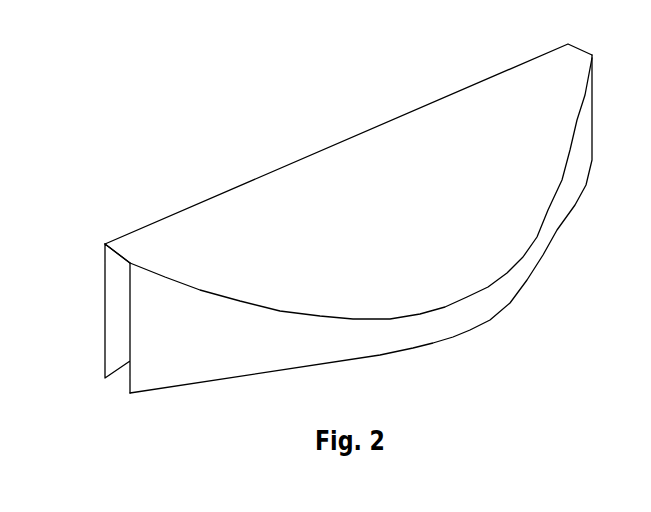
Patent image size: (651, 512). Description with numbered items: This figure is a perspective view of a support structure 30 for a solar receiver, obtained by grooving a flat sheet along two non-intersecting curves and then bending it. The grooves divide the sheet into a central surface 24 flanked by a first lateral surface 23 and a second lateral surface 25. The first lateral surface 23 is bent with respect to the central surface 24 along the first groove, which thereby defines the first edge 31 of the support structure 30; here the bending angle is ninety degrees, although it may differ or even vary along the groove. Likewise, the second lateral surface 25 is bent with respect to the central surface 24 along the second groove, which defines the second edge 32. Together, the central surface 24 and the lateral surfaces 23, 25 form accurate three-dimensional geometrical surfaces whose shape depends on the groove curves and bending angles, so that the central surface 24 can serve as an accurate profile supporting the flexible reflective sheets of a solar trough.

The support structure 30 is at (303, 240).
The central surface 24 is at (348, 216).
The first edge 31 is at (196, 206).
The first lateral surface 23 is at (118, 288).
The second lateral surface 25 is at (220, 338).
The second edge 32 is at (390, 318).